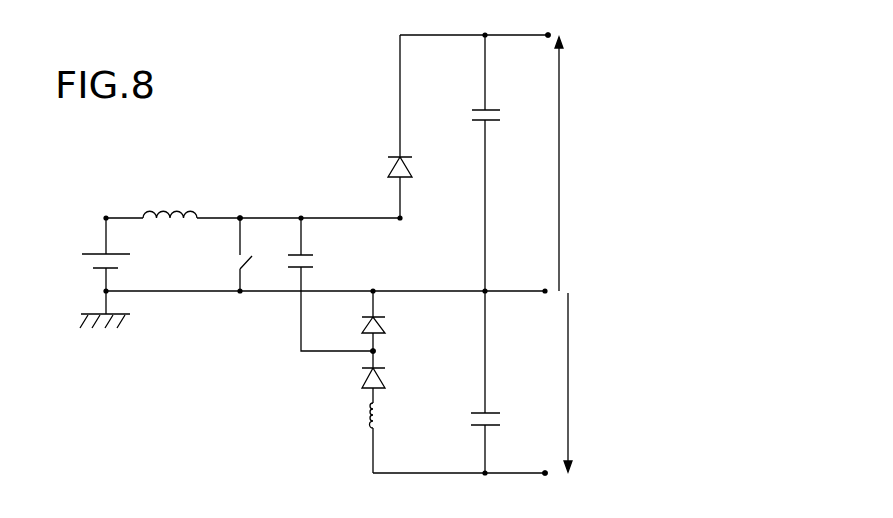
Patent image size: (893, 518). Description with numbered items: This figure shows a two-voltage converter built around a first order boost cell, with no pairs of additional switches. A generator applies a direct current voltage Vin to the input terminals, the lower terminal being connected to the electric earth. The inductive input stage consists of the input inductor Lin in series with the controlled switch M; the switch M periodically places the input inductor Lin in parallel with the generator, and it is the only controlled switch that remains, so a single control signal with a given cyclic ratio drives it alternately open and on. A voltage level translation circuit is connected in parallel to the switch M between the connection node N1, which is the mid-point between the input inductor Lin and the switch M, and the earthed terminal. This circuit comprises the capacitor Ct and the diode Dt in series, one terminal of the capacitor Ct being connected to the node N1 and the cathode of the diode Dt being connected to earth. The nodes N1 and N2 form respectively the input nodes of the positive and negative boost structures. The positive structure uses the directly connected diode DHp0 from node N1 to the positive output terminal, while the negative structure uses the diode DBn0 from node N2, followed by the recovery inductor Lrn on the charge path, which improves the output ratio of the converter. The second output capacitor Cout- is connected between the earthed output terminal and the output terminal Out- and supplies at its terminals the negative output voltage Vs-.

The direct current voltage Vin is at (70, 219).
The input inductor Lin is at (170, 199).
The connection node N1 is at (241, 215).
The controlled switch M is at (234, 254).
The capacitor Ct is at (330, 284).
The diode DHp0 is at (364, 126).
The diode Dt is at (393, 321).
The node N2 is at (375, 351).
The diode DBn0 is at (336, 377).
The recovery inductor Lrn is at (351, 438).
The second output capacitor Cout- is at (514, 382).
The output terminal Out- is at (545, 485).
The negative output voltage Vs- is at (587, 382).